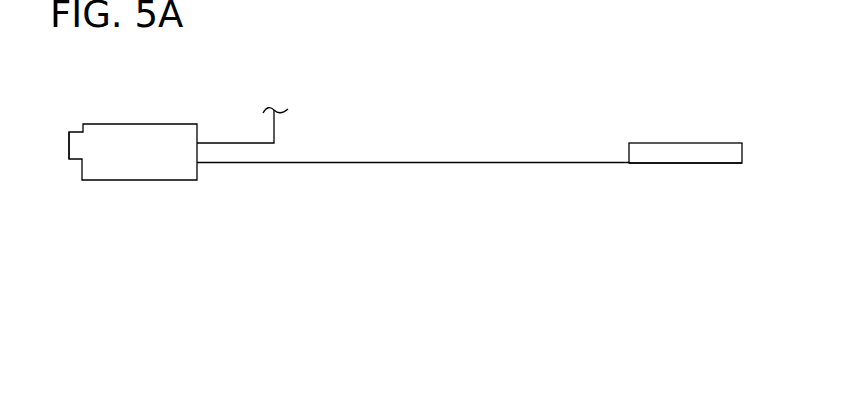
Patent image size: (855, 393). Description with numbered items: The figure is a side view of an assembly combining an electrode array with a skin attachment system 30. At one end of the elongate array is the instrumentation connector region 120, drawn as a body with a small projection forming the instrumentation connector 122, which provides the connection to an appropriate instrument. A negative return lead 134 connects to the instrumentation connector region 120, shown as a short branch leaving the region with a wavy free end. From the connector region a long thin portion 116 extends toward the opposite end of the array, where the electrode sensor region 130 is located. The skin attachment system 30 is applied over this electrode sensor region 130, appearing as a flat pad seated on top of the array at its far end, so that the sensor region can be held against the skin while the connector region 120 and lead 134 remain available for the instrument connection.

The instrumentation connector region 120 is at (143, 124).
The instrumentation connector 122 is at (67, 140).
The negative return lead 134 is at (235, 143).
The shaft 116 is at (405, 164).
The skin attachment system 30 is at (683, 143).
The electrode sensor region 130 is at (704, 163).